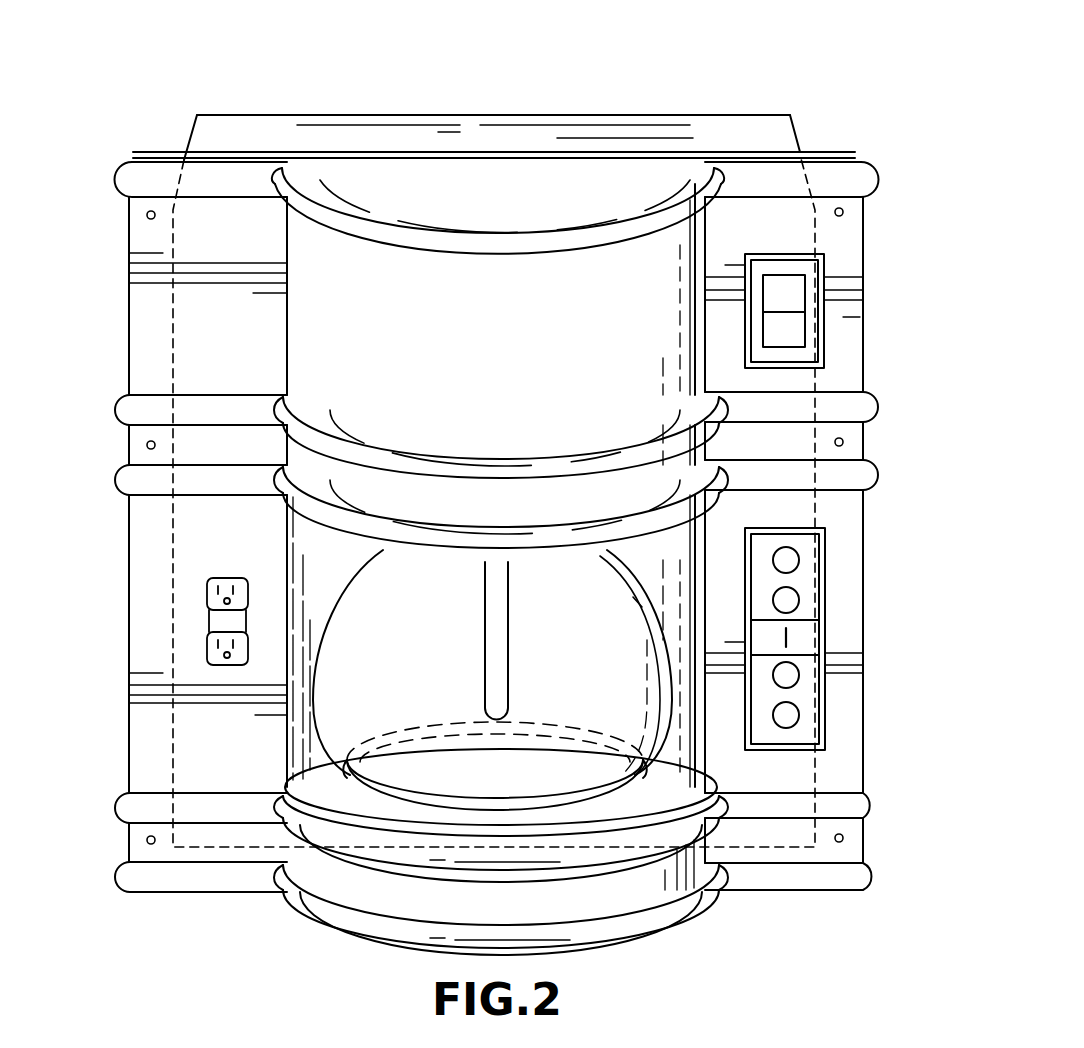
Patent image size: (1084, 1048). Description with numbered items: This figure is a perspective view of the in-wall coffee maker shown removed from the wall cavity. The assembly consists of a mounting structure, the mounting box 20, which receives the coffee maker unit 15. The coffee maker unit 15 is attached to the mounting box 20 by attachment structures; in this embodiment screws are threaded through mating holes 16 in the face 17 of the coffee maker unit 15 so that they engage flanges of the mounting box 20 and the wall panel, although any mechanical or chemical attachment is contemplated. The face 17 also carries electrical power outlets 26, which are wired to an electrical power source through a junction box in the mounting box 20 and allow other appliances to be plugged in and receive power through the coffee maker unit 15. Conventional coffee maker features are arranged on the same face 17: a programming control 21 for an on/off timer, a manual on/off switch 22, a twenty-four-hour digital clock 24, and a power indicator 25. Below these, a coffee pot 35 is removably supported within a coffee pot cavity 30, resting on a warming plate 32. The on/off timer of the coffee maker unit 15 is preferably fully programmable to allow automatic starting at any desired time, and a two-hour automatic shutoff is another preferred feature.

The coffee maker unit 15 is at (853, 120).
The mating holes 16 is at (147, 215).
The face 17 is at (480, 356).
The mounting box 20 is at (262, 117).
The programming control 21 is at (808, 713).
The manual on/off switch 22 is at (793, 332).
The 24-hour digital clock 24 is at (808, 579).
The power indicator 25 is at (807, 635).
The electrical power outlets 26 is at (205, 620).
The coffee pot cavity 30 is at (318, 740).
The warming plate 32 is at (457, 817).
The coffee pot 35 is at (668, 622).